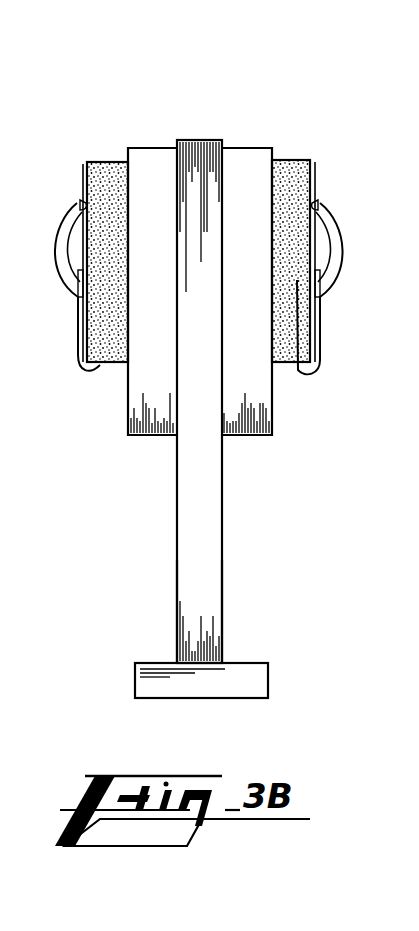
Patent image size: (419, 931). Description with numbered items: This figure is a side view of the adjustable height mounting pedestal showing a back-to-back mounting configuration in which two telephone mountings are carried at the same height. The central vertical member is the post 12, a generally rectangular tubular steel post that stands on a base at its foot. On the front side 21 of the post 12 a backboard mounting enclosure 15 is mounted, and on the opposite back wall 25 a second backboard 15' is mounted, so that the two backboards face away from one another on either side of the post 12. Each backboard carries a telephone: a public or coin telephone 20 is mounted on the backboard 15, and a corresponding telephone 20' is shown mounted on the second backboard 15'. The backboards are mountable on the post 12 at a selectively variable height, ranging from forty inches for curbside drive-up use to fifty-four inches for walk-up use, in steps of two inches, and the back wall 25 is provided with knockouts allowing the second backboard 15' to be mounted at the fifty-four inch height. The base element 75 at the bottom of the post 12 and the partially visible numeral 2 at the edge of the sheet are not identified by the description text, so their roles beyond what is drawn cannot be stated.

The post 12 is at (207, 140).
The backboard mounting enclosure 15 is at (148, 258).
The second backboard 15' is at (260, 262).
The public or coin telephone 20 is at (66, 247).
The right pad with spring clip 20' is at (335, 252).
The front side 21 is at (177, 625).
The back wall 25 is at (223, 560).
The base 75 is at (250, 663).
The partial numeral (cut off) 2 is at (412, 555).